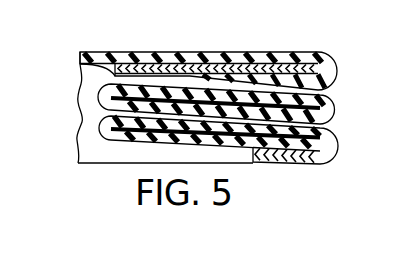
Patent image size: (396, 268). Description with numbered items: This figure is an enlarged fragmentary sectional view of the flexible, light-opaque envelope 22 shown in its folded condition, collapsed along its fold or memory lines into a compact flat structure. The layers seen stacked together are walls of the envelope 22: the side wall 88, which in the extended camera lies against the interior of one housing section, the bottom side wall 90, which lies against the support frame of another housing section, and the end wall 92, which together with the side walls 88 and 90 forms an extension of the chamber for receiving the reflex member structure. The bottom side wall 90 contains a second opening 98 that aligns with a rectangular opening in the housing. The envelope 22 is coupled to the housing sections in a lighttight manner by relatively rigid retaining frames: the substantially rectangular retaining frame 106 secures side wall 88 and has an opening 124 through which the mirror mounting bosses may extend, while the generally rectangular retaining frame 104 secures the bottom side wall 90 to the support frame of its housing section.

The envelope 22 is at (235, 57).
The side wall 88 is at (206, 61).
The retaining frame 106 is at (258, 70).
The opening 124 is at (80, 86).
The end wall 92 is at (341, 107).
The retaining frame 104 is at (254, 147).
The side wall 90 is at (218, 154).
The second opening 98 is at (142, 122).